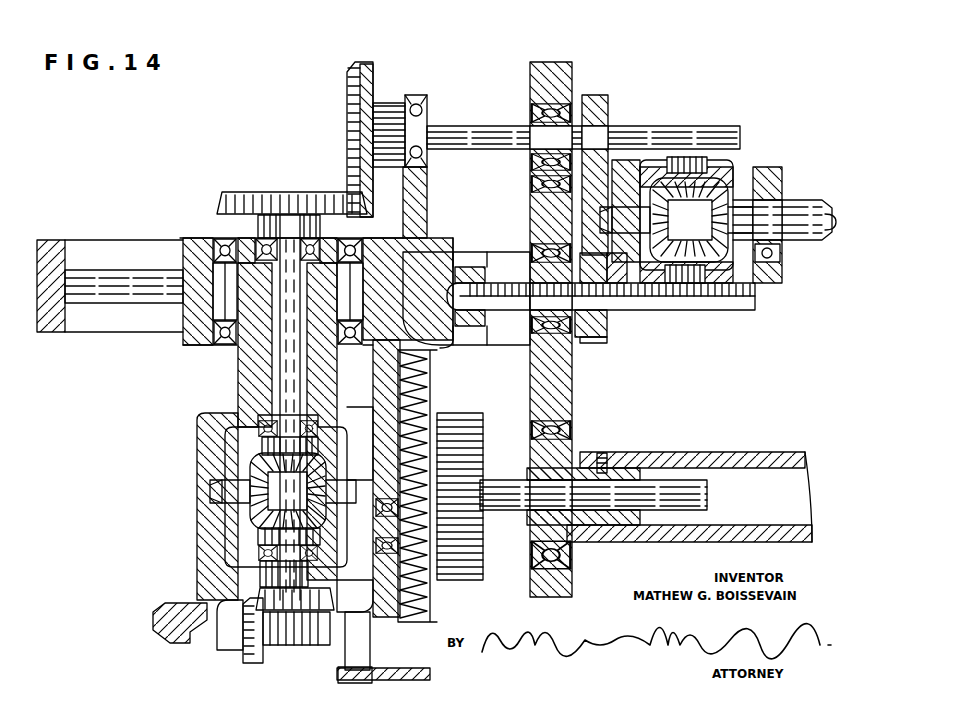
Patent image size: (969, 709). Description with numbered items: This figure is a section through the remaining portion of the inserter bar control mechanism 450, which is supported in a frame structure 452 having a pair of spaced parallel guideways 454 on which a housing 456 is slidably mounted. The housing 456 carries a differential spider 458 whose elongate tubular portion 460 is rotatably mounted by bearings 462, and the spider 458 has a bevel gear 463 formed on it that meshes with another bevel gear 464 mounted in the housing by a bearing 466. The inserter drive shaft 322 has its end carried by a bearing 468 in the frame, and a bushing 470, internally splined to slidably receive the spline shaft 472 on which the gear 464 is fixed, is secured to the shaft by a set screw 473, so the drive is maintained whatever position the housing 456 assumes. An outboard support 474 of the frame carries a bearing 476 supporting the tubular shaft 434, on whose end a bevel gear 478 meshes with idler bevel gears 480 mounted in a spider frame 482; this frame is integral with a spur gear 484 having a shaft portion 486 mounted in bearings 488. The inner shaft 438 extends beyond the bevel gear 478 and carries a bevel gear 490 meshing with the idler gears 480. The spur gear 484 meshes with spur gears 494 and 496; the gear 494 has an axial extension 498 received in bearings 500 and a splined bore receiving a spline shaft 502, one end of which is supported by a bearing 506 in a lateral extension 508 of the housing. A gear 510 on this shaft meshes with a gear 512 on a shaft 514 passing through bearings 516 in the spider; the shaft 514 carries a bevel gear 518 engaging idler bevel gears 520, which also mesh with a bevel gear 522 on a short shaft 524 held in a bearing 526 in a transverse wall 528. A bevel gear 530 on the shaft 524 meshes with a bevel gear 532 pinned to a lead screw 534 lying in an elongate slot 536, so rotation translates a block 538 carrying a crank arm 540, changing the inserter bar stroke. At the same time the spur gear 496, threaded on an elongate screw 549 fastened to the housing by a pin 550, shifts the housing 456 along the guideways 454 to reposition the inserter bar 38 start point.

The drive unit 38 is at (210, 150).
The inserter drive shaft 322 is at (740, 462).
The tubular shaft 434 is at (800, 201).
The shaft 438 is at (834, 222).
The inserter bar control mechanism 450 is at (602, 59).
The frame structure 452 is at (80, 320).
The guideways 454 is at (87, 290).
The housing 456 is at (180, 240).
The differential spider 458 is at (205, 447).
The elongate tubular portion 460 is at (245, 355).
The bearings 462 is at (372, 235).
The bevel gear 463 is at (165, 620).
The bevel gear 464 is at (418, 585).
The bearing 466 is at (400, 480).
The bearing 468 is at (555, 428).
The bushing 470 is at (590, 520).
The spline shaft 472 is at (650, 495).
The set screw 473 is at (592, 465).
The outboard support 474 is at (770, 172).
The bearing 476 is at (778, 262).
The bevel gear 478 is at (735, 258).
The idler bevel gears 480 is at (670, 180).
The spider frame 482 is at (720, 168).
The spur gear 484 is at (595, 195).
The shaft portion 486 is at (555, 215).
The bearings 488 is at (555, 195).
The bevel gear 490 is at (655, 242).
The spur gear 494 is at (598, 98).
The spur gear 496 is at (592, 338).
The axial extension 498 is at (550, 158).
The bearings 500 is at (568, 112).
The spline shaft 502 is at (475, 135).
The bearing 506 is at (412, 102).
The lateral extension 508 is at (380, 98).
The gear 510 is at (345, 100).
The gear 512 is at (280, 198).
The shaft 514 is at (285, 375).
The bearings 516 is at (255, 248).
The bevel gear 518 is at (250, 433).
The idler bevel gears 520 is at (265, 478).
The bevel gear 522 is at (245, 508).
The short shaft 524 is at (260, 536).
The bearing 526 is at (255, 551).
The transverse wall 528 is at (255, 572).
The bevel gear 530 is at (205, 642).
The bevel gear 532 is at (247, 660).
The lead screw 534 is at (305, 642).
The elongate slot 536 is at (330, 585).
The block 538 is at (360, 660).
The crank arm 540 is at (425, 676).
The elongate screw 549 is at (730, 306).
The pin 550 is at (470, 322).